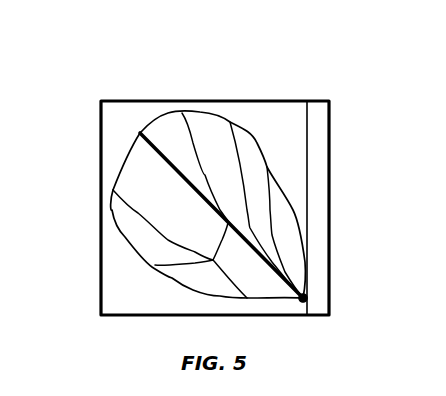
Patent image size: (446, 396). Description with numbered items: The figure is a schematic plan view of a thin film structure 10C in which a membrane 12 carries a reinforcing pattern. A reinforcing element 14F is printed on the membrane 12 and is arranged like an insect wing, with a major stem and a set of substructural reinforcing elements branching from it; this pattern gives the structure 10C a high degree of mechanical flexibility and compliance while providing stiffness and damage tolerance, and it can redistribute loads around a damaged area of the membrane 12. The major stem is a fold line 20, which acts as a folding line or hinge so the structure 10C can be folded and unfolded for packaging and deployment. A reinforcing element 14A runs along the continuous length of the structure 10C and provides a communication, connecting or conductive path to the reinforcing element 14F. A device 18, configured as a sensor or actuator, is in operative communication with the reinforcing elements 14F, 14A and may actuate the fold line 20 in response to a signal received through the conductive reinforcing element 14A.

The thin film structure 10C is at (149, 80).
The membrane 12 is at (285, 110).
The reinforcing element 14A is at (307, 158).
The reinforcing element 14F is at (113, 190).
The device 18 is at (303, 298).
The fold line 20 is at (267, 267).